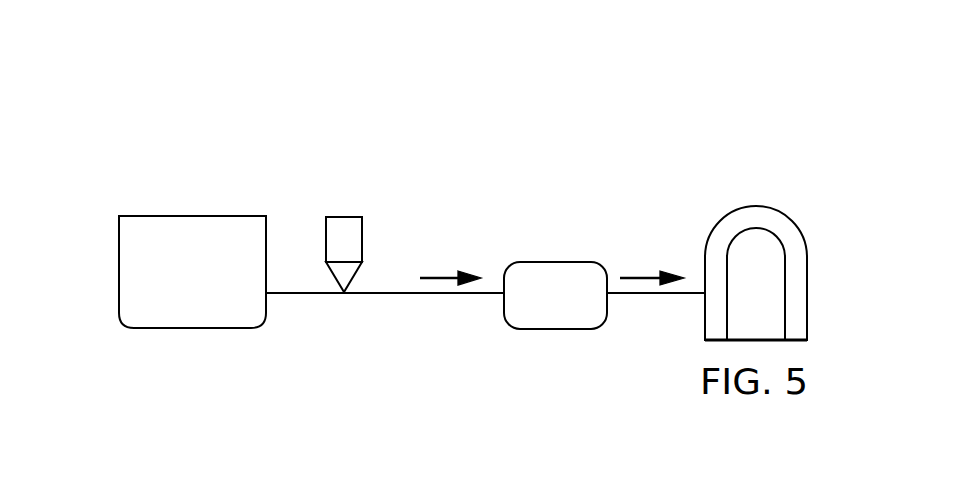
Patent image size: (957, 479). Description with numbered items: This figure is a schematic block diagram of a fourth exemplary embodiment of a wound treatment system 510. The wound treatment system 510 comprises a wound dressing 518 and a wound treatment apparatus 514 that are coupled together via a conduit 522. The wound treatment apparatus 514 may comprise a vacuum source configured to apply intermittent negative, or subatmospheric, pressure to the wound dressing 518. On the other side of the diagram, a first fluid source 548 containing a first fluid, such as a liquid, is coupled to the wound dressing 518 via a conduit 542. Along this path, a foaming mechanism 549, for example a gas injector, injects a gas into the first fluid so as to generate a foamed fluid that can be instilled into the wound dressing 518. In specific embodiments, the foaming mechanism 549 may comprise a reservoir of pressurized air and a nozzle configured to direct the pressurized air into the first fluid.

The wound treatment system 510 is at (175, 155).
The first fluid source 548 is at (119, 247).
The foaming mechanism 549 is at (343, 215).
The conduit 542 is at (455, 294).
The wound dressing 518 is at (555, 330).
The conduit 522 is at (655, 295).
The wound treatment apparatus 514 is at (808, 283).